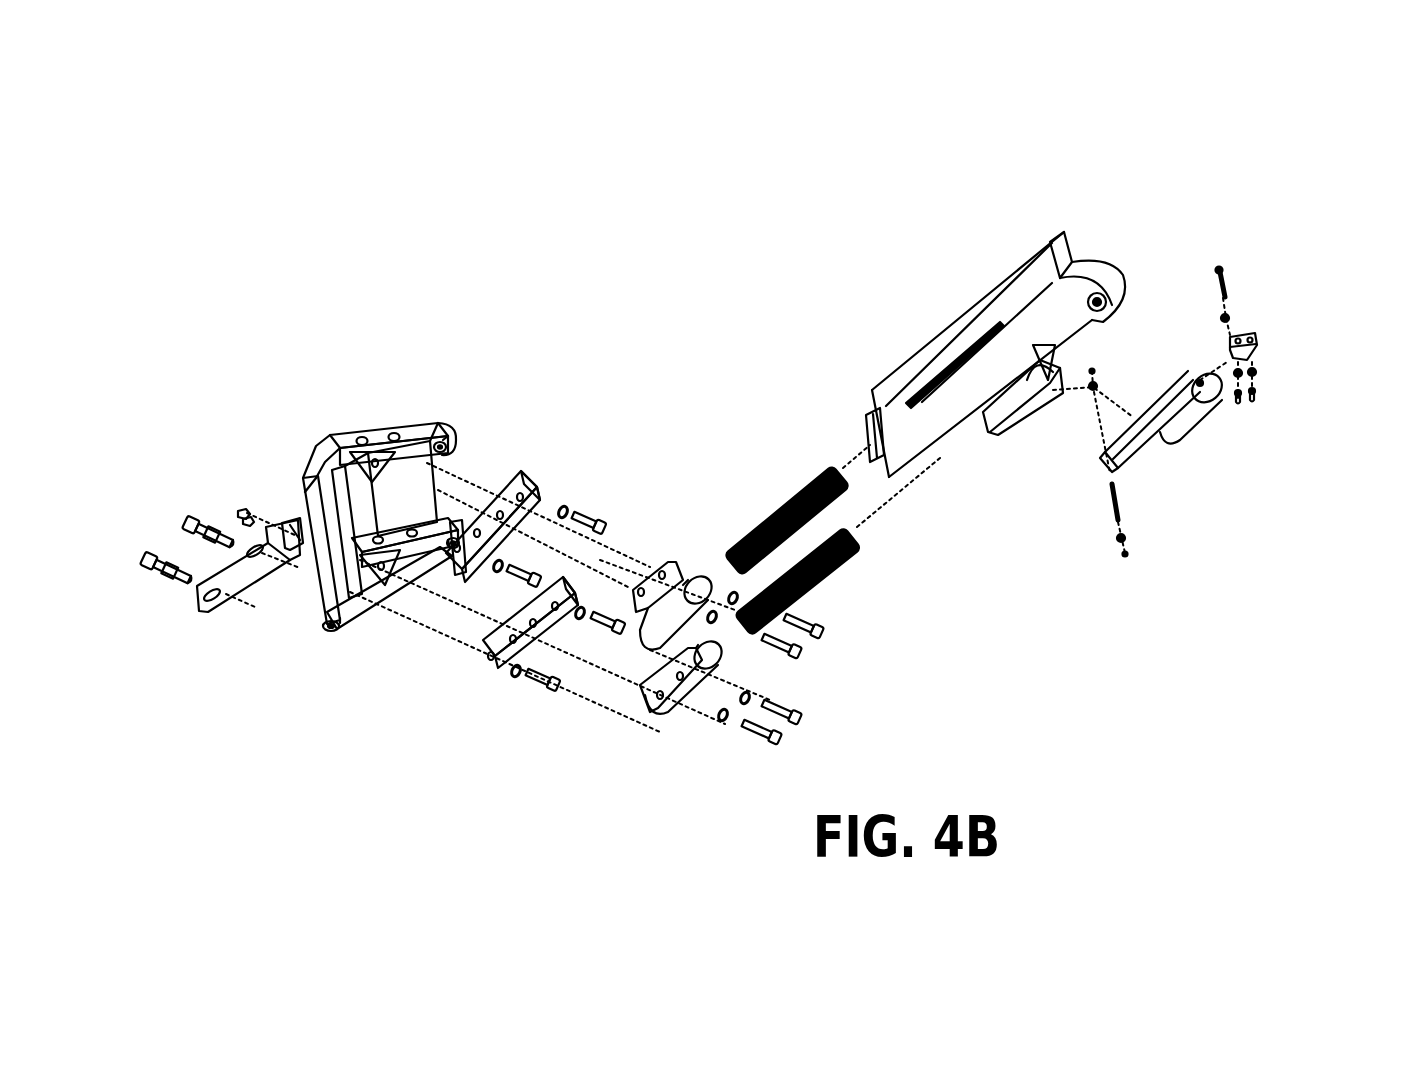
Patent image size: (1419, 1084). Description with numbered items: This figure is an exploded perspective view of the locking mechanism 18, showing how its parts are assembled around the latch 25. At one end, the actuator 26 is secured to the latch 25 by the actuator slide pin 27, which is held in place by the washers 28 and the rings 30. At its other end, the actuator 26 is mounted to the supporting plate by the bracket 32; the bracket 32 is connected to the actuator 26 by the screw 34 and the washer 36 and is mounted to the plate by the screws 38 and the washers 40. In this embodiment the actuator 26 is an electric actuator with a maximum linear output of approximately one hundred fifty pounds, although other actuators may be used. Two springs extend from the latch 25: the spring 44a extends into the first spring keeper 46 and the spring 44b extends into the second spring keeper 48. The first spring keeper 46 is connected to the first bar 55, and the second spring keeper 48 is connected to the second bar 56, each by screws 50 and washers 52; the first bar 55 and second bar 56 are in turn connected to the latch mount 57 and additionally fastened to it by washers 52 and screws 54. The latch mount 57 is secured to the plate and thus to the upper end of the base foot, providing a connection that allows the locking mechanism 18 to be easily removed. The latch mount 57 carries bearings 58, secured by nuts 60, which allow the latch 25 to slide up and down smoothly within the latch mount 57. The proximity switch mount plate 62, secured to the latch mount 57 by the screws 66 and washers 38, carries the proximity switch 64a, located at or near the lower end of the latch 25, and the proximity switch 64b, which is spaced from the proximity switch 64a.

The locking mechanism 18 is at (1297, 551).
The latch 25 is at (897, 330).
The actuator 26 is at (1185, 362).
The actuator slide pin 27 is at (1122, 494).
The washers 28 is at (1097, 384).
The rings 30 is at (1094, 369).
The bracket 32 is at (1259, 342).
The screw 34 is at (1222, 272).
The washer 36 is at (1230, 320).
The screws 38 is at (290, 525).
The washers 40 is at (1258, 373).
The spring 44a is at (830, 468).
The spring 44b is at (860, 542).
The first spring keeper 46 is at (655, 562).
The second spring keeper 48 is at (655, 710).
The screws 50 is at (823, 636).
The washers 52 is at (564, 506).
The screws 54 is at (600, 520).
The first bar 55 is at (506, 485).
The second bar 56 is at (502, 667).
The latch mount 57 is at (403, 416).
The bearings 58 is at (305, 492).
The nuts 60 is at (301, 510).
The proximity switch mount plate 62 is at (258, 582).
The proximity switch 64a is at (189, 520).
The proximity switch 64b is at (143, 558).
The screws 66 is at (240, 509).